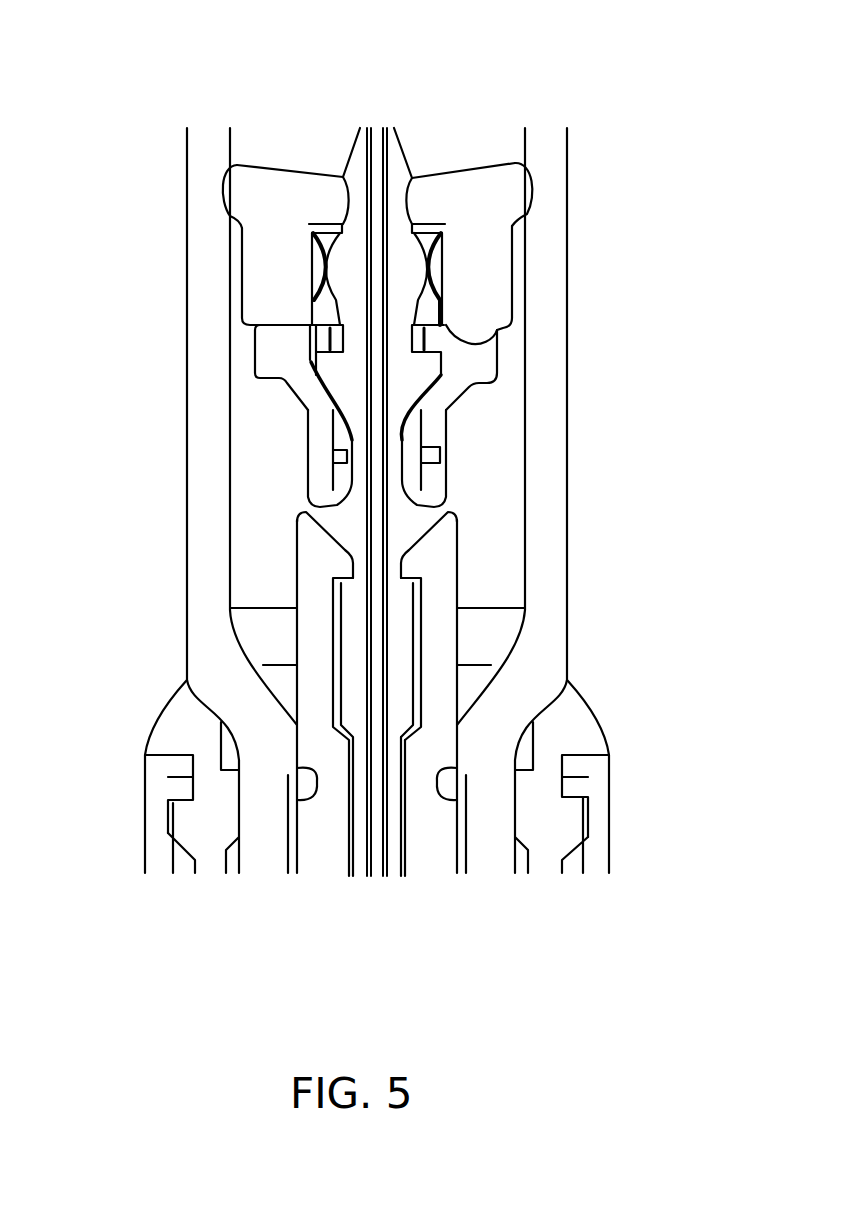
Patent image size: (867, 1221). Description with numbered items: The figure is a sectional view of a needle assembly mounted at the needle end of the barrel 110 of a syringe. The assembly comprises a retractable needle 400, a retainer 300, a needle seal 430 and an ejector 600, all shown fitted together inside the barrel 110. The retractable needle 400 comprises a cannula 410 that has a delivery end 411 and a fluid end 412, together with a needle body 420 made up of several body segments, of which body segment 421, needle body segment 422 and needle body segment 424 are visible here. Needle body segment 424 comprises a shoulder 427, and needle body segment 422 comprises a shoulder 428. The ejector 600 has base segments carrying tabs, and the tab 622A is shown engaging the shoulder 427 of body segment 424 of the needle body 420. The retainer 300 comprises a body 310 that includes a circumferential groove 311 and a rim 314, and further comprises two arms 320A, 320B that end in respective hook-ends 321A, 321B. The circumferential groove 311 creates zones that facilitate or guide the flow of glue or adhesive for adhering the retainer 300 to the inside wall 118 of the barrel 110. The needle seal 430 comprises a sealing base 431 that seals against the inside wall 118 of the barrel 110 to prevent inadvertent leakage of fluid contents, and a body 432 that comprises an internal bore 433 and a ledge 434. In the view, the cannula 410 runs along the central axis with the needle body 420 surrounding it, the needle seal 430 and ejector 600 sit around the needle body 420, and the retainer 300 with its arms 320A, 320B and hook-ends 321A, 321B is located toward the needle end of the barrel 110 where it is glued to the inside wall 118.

The barrel 110 is at (583, 322).
The inside wall 118 is at (230, 147).
The retainer 300 is at (325, 882).
The body 310 is at (333, 843).
The circumferential groove 311 is at (300, 785).
The rim 314 is at (460, 766).
The arm 320A is at (313, 640).
The arm 320B is at (438, 640).
The hook-end 321A is at (312, 538).
The hook-end 321B is at (437, 538).
The retractable needle 400 is at (408, 136).
The cannula 410 is at (218, 215).
The delivery end 411 is at (352, 128).
The fluid end 412 is at (373, 128).
The needle body 420 is at (484, 423).
The body segment 421 is at (403, 876).
The needle body segment 422 is at (352, 608).
The needle body segment 424 is at (303, 340).
The shoulder 427 is at (310, 376).
The shoulder 428 is at (423, 582).
The needle seal 430 is at (538, 211).
The sealing base 431 is at (247, 193).
The body 432 is at (253, 283).
The internal bore 433 is at (427, 160).
The ledge 434 is at (518, 186).
The ejector 600 is at (507, 370).
The tab 622A is at (258, 352).